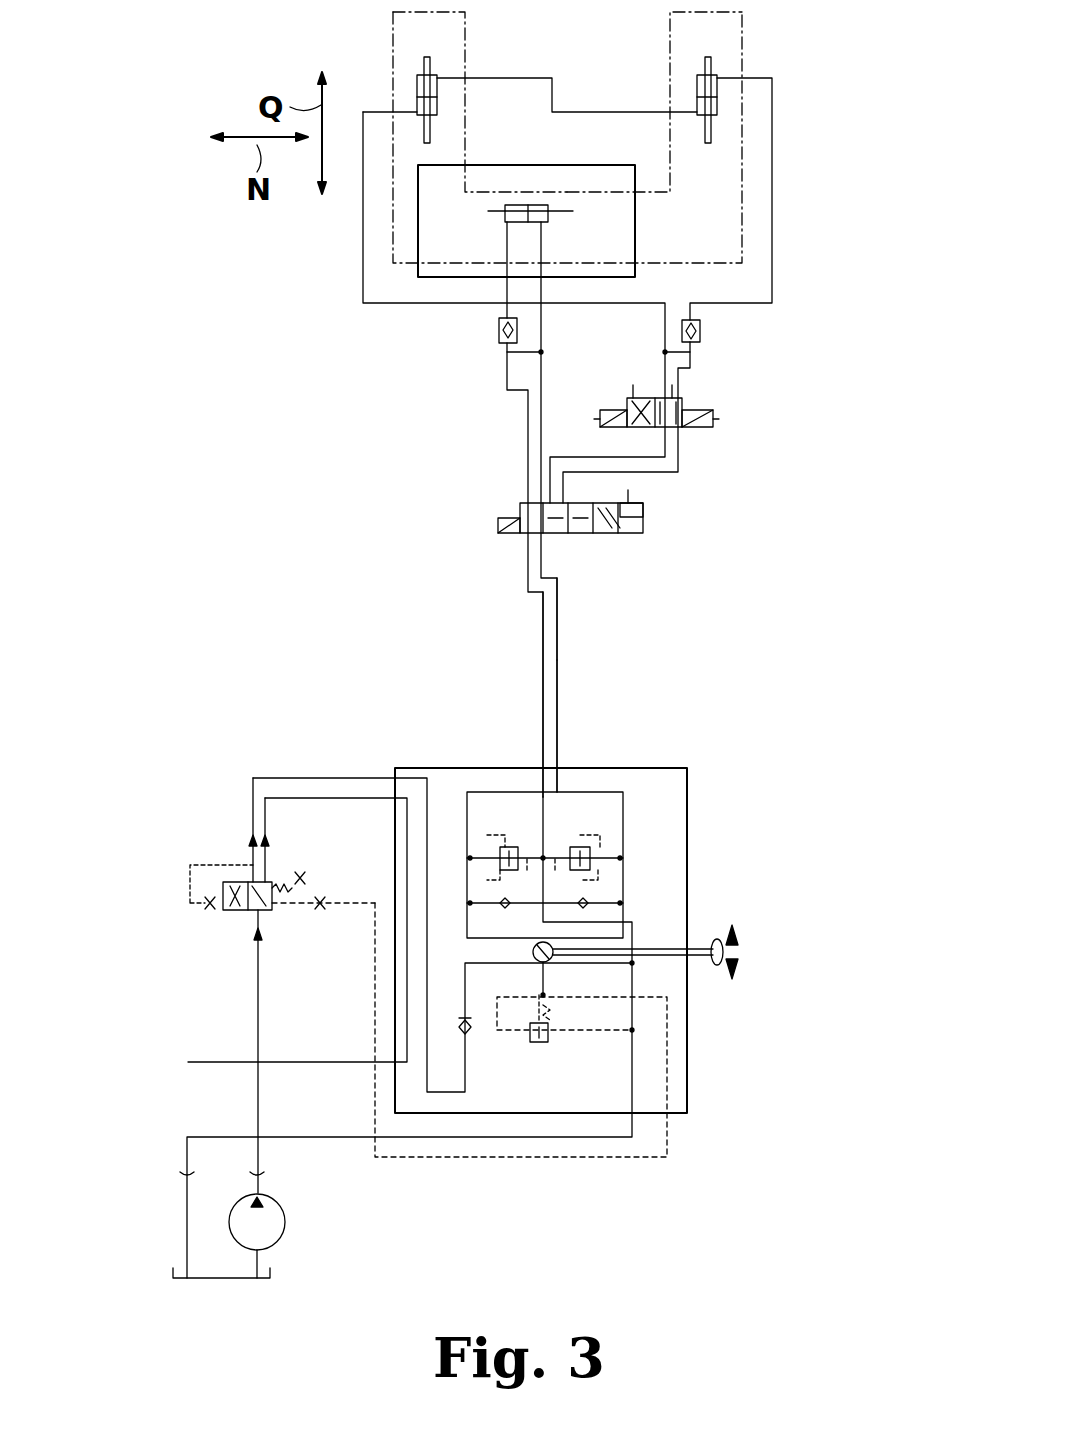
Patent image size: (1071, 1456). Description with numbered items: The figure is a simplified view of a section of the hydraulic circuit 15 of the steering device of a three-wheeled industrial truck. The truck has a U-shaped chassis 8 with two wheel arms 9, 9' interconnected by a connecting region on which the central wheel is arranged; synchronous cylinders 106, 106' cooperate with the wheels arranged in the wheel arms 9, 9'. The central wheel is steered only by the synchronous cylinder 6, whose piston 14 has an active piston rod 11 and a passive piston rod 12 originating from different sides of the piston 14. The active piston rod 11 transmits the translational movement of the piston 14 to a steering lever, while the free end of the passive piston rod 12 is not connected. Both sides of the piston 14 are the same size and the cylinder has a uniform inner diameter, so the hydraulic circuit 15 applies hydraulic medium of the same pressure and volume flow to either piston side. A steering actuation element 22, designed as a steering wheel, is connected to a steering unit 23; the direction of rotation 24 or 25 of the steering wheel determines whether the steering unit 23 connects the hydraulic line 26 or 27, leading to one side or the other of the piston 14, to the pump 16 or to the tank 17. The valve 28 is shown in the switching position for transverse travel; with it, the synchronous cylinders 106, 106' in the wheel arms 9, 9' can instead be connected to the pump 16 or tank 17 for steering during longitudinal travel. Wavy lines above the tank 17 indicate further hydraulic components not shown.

The U-shaped chassis 8 is at (742, 45).
The wheel arm 9 is at (480, 102).
The wheel arm 9' is at (654, 102).
The synchronous cylinder 106 is at (721, 143).
The synchronous cylinder 106' is at (490, 103).
The synchronous cylinder 6 is at (478, 205).
The piston 14 is at (530, 232).
The passive piston rod 12 is at (492, 222).
The active piston rod 11 is at (562, 222).
The valve 28 is at (662, 521).
The hydraulic circuit 15 is at (558, 637).
The hydraulic line 26 is at (558, 694).
The hydraulic line 27 is at (543, 670).
The steering unit 23 is at (690, 795).
The steering actuation element 22 is at (718, 975).
The direction of rotation 24 is at (740, 940).
The direction of rotation 25 is at (740, 965).
The pump 16 is at (286, 1222).
The tank 17 is at (218, 1283).